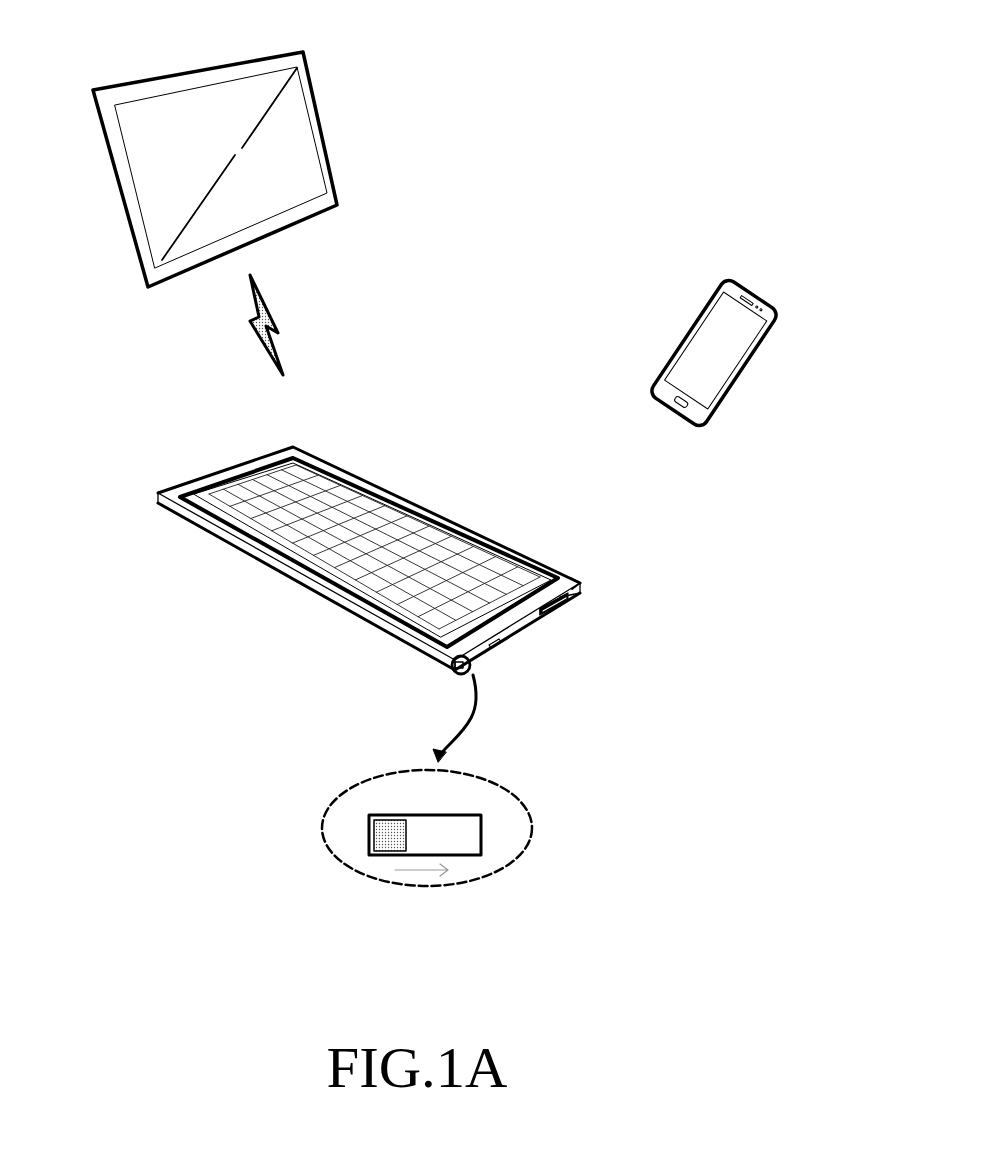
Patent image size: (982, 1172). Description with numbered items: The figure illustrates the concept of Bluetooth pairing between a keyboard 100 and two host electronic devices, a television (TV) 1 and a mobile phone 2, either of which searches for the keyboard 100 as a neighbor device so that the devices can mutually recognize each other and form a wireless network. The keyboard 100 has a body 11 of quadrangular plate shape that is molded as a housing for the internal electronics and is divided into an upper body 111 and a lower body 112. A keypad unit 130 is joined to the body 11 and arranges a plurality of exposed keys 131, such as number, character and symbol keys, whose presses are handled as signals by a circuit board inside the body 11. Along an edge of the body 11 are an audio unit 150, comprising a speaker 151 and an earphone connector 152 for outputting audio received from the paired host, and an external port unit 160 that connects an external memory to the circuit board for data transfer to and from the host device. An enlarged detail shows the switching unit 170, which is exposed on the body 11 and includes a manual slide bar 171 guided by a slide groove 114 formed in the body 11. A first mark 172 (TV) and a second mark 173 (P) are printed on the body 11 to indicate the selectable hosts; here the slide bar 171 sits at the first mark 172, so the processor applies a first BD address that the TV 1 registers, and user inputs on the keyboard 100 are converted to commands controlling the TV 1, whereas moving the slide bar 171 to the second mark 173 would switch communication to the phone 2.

The Television (TV) 1 is at (205, 63).
The mobile phone 2 is at (740, 284).
The keyboard 100 is at (399, 577).
The body 11 is at (335, 607).
The keypad unit 130 is at (315, 457).
The keys 131 is at (417, 527).
The upper body 111 is at (581, 583).
The lower body 112 is at (581, 594).
The speaker unit (audio unit) 150 is at (576, 637).
The speaker 151 is at (565, 607).
The earphone connector 152 is at (541, 612).
The external port unit 160 is at (495, 647).
The switching unit 170 is at (454, 831).
The slide bar 171 is at (371, 839).
The first mark (TV) 172 is at (370, 795).
The second mark (P) 173 is at (482, 798).
The slide groove 114 is at (482, 840).